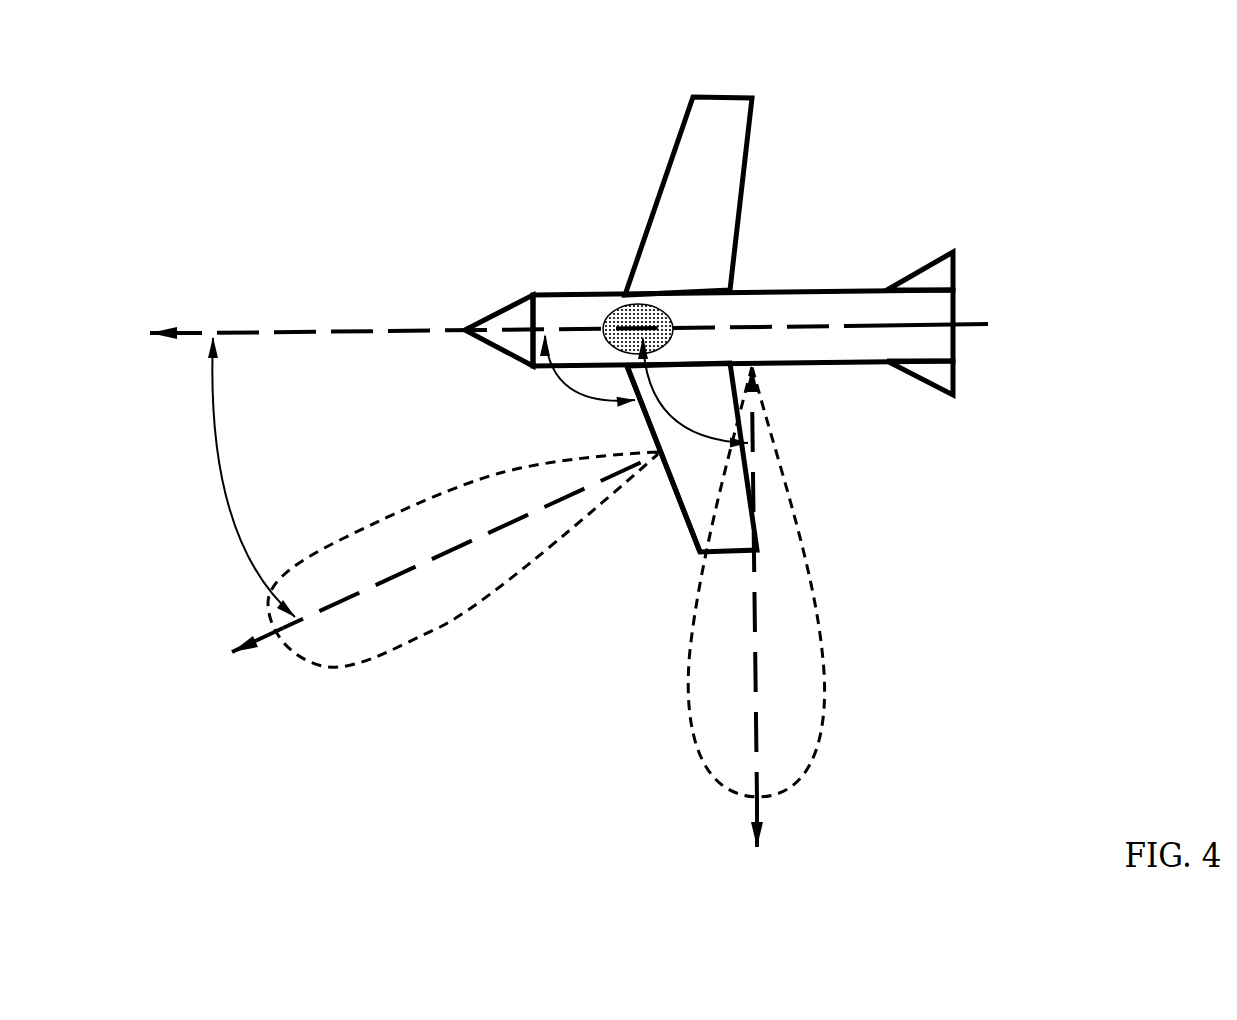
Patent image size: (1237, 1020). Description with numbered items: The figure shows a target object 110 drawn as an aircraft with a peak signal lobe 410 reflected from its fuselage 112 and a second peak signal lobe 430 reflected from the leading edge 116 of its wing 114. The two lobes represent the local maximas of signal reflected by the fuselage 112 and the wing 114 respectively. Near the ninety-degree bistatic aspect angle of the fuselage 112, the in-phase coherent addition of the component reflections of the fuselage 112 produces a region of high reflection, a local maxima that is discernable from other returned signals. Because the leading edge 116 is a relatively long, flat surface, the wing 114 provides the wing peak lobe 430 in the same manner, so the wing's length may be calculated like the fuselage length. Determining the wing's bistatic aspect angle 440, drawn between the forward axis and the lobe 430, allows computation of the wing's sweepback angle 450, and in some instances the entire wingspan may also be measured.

The target object 110 is at (729, 96).
The fuselage 112 is at (828, 364).
The wing 114 is at (735, 560).
The leading edge 116 is at (680, 510).
The peak signal lobe 410 is at (808, 573).
The peak signal lobe 430 is at (497, 591).
The bistatic aspect angle 440 is at (218, 456).
The sweepback angle 450 is at (565, 381).